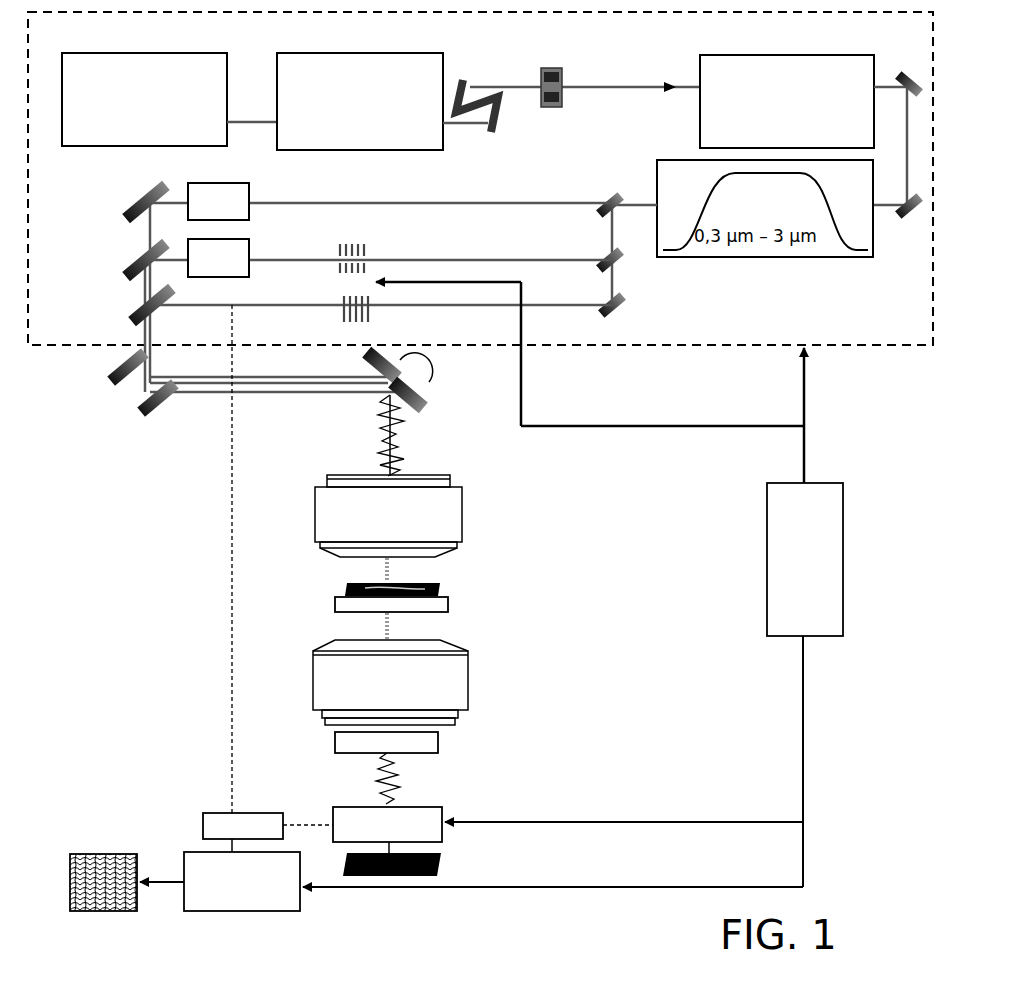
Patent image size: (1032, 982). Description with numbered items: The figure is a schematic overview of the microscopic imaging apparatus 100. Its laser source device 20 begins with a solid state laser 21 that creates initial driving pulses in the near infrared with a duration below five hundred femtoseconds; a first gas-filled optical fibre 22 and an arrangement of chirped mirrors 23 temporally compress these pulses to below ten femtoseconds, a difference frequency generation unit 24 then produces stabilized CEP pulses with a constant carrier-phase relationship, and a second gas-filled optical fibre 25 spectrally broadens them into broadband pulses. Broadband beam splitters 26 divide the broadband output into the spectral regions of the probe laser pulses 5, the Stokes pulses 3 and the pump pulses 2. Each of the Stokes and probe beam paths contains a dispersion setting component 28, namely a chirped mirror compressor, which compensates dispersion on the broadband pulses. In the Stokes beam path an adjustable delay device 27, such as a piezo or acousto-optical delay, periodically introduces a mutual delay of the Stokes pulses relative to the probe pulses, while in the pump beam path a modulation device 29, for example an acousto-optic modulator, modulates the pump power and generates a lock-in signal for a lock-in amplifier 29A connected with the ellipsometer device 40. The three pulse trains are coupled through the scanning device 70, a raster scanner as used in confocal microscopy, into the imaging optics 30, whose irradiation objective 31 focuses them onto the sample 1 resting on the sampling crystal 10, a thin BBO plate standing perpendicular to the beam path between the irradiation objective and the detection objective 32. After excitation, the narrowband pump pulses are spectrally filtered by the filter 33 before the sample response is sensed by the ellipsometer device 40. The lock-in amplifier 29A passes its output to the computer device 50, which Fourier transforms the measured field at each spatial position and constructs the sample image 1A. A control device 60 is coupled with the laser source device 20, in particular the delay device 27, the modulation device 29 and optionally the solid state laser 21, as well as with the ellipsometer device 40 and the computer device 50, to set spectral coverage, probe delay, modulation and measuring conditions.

The microscopic imaging apparatus 100 is at (112, 594).
The laser source device 20 is at (914, 334).
The solid state laser 21 is at (166, 78).
The first gas-filled optical fibre 22 is at (334, 78).
The arrangement of chirped mirrors 23 is at (467, 82).
The difference frequency generation unit 24 is at (552, 72).
The second gas-filled optical fibre 25 is at (786, 78).
The broadband beam splitters 26 is at (622, 276).
The adjustable delay device 27 is at (368, 258).
The dispersion setting component 28 is at (249, 196).
The modulation device 29 is at (346, 310).
The lock-in amplifier 29A is at (222, 823).
The probe laser pulses 5 is at (381, 187).
The Stokes pulses 3 is at (381, 244).
The pump pulses 2 is at (381, 290).
The scanning device 70 is at (459, 431).
The imaging optics 30 is at (538, 531).
The irradiation objective 31 is at (453, 503).
The detection objective 32 is at (460, 693).
The filter 33 is at (425, 740).
The sample 1 is at (338, 587).
The sampling crystal 10 is at (331, 605).
The sample image 1A is at (110, 862).
The ellipsometer device 40 is at (436, 838).
The computer device 50 is at (294, 898).
The control device 60 is at (835, 628).